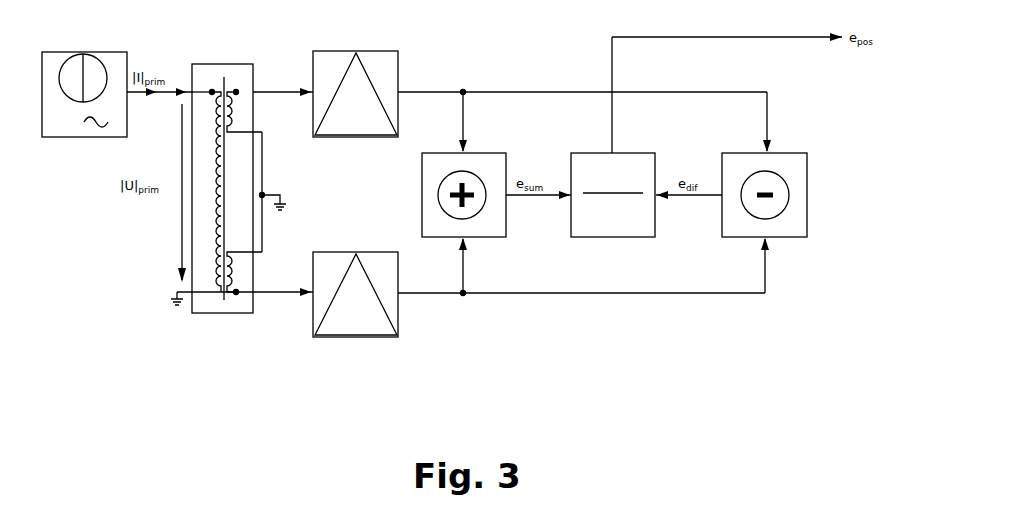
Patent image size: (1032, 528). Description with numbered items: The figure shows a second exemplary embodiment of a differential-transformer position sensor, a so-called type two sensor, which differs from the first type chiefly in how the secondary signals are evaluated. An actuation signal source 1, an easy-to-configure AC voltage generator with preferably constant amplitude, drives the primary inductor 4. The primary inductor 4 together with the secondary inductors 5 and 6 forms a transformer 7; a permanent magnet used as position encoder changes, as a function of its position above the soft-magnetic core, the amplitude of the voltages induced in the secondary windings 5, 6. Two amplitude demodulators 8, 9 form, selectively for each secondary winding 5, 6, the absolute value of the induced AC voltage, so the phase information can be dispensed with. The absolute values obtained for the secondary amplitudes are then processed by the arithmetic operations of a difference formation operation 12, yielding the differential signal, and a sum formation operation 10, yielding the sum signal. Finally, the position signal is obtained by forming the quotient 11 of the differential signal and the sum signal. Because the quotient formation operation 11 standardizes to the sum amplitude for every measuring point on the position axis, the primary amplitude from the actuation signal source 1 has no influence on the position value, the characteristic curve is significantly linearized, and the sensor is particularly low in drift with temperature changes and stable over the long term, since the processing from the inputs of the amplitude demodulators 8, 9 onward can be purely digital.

The actuation signal source 1 is at (60, 138).
The primary inductor 4 is at (216, 152).
The secondary inductor 5 is at (238, 114).
The secondary inductor 6 is at (238, 270).
The transformer 7 is at (223, 213).
The amplitude demodulator 8 is at (386, 72).
The amplitude demodulator 9 is at (388, 306).
The sum formation operation 10 is at (508, 212).
The quotient formation operation 11 is at (658, 210).
The difference formation operation 12 is at (786, 238).